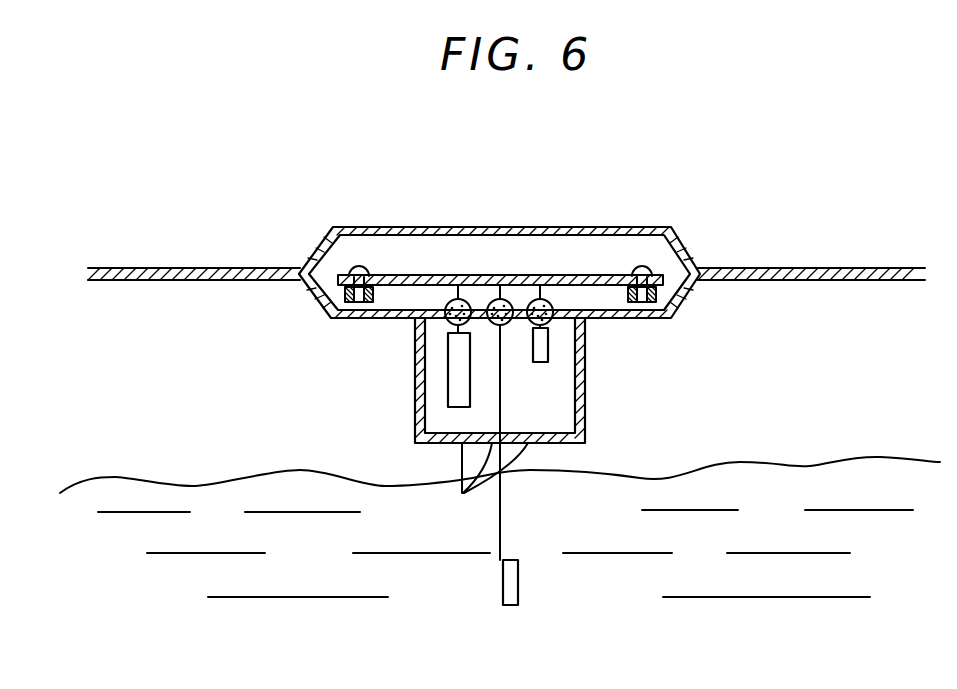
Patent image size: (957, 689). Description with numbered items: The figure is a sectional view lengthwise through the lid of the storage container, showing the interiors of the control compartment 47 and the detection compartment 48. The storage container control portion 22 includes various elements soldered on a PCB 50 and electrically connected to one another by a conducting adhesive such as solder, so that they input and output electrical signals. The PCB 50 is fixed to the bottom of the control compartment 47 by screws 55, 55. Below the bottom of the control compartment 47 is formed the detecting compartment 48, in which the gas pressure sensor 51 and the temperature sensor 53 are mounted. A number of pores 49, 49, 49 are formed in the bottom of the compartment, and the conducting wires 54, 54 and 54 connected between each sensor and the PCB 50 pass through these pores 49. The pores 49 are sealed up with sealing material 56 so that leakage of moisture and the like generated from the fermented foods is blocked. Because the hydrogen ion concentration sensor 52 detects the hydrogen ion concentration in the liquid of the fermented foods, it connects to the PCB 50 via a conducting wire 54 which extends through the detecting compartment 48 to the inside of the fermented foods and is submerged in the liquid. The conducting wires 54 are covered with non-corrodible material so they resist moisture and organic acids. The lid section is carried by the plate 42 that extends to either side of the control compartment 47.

The storage container control portion 22 is at (435, 266).
The plate 42 is at (194, 266).
The control compartment 47 is at (398, 250).
The detecting compartment 48 is at (555, 418).
The pores 49 is at (483, 487).
The PCB 50 is at (583, 275).
The gas pressure sensor 51 is at (456, 392).
The hydrogen ion concentration sensor 52 is at (520, 595).
The temperature sensor 53 is at (540, 362).
The conducting wires 54 is at (448, 325).
The screws 55 is at (355, 265).
The sealing material 56 is at (539, 299).